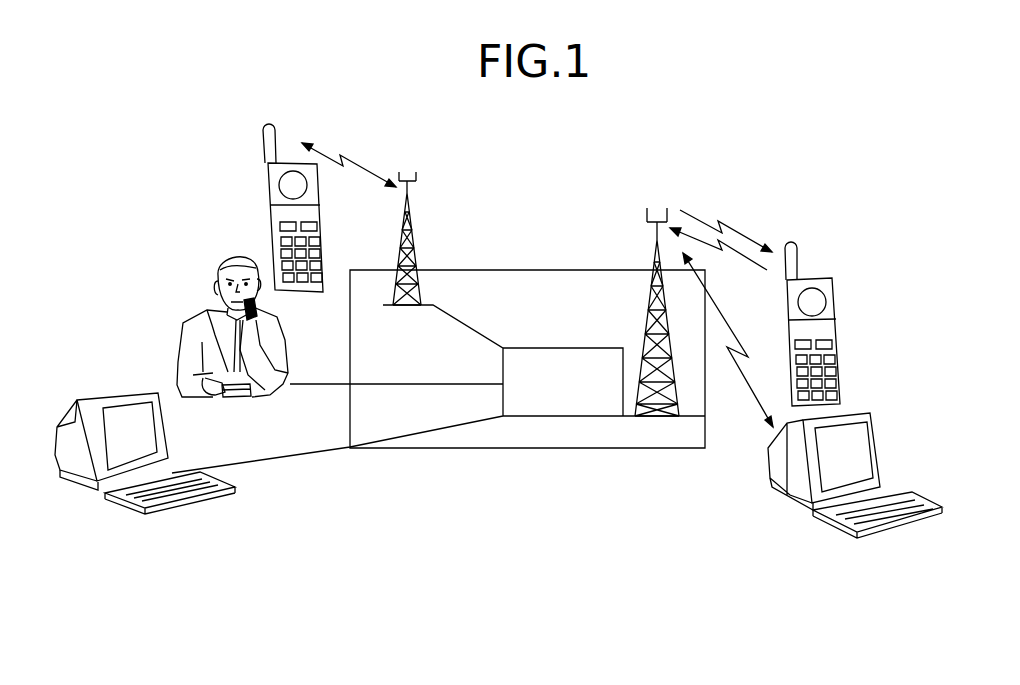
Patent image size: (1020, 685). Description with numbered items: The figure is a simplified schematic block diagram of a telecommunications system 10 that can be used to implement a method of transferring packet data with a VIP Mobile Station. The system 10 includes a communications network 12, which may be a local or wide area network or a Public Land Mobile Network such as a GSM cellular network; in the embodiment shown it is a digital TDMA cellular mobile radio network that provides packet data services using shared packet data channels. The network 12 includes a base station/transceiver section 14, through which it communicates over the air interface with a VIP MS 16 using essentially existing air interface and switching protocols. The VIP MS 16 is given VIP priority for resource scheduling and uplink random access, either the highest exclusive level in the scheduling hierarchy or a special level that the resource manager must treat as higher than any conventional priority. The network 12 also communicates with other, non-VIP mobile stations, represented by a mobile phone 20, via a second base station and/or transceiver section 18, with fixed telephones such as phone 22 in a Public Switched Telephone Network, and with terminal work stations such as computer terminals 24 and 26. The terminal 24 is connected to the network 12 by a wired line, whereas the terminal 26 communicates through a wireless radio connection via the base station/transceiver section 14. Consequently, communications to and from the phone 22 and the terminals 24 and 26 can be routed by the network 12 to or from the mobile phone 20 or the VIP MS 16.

The system 10 is at (170, 236).
The communications network 12 is at (619, 449).
The base station/transceiver section 14 is at (682, 390).
The VIP MS 16 is at (838, 327).
The second base station and/or transceiver section 18 is at (413, 240).
The mobile phone 20 is at (272, 234).
The phone 22 is at (243, 397).
The computer terminal 24 is at (180, 500).
The computer terminal 26 is at (820, 518).